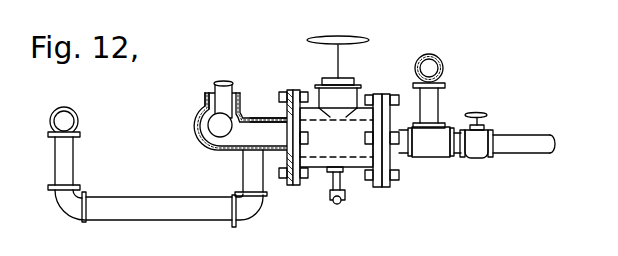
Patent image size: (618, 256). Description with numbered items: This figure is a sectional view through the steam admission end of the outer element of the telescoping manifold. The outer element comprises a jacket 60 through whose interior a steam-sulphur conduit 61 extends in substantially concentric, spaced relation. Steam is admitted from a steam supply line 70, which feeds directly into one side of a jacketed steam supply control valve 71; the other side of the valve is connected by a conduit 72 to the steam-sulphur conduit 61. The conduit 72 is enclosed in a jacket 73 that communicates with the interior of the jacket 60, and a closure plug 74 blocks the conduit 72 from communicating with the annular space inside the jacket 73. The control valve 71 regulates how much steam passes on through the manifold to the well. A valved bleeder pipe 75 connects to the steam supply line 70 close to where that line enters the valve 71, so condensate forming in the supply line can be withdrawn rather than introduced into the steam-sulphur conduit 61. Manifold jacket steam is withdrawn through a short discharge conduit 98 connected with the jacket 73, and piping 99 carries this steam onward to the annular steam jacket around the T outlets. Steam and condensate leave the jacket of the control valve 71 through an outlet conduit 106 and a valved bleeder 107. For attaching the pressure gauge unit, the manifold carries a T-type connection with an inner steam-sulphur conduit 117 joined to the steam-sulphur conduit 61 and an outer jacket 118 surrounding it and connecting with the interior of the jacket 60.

The jacket 60 is at (205, 145).
The steam-sulphur conduit 61 is at (197, 131).
The steam supply line 70 is at (445, 67).
The steam supply control valve 71 is at (352, 172).
The conduit 72 is at (268, 117).
The jacket 73 is at (254, 118).
The closure plug 74 is at (273, 156).
The valved bleeder pipe 75 is at (512, 148).
The discharge conduit 98 is at (243, 169).
The piping 99 is at (110, 207).
The outlet conduit 106 is at (327, 177).
The valved bleeder 107 is at (341, 204).
The inner steam-sulphur conduit 117 is at (215, 88).
The outer jacket 118 is at (205, 100).